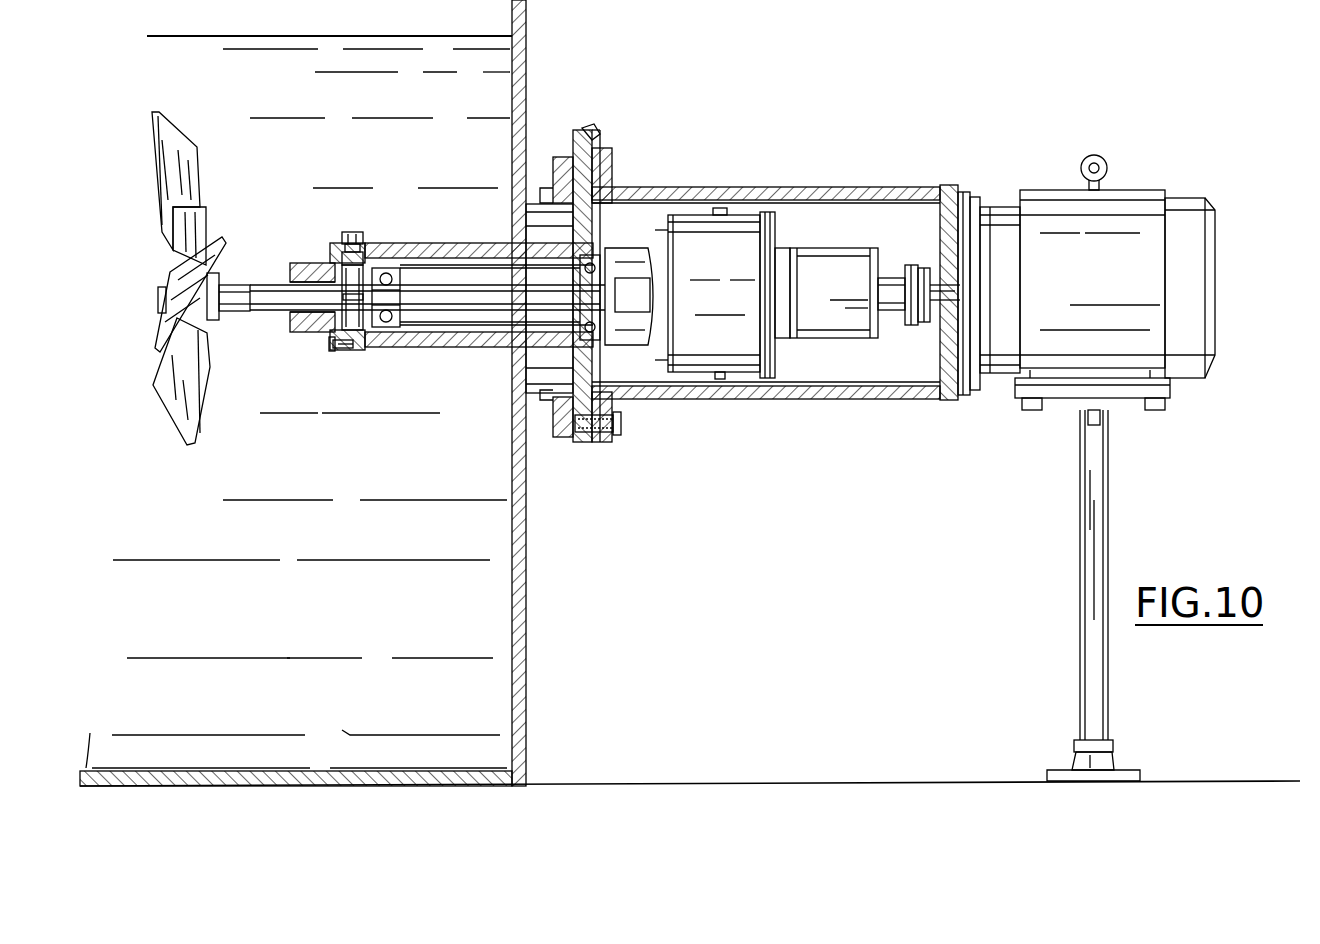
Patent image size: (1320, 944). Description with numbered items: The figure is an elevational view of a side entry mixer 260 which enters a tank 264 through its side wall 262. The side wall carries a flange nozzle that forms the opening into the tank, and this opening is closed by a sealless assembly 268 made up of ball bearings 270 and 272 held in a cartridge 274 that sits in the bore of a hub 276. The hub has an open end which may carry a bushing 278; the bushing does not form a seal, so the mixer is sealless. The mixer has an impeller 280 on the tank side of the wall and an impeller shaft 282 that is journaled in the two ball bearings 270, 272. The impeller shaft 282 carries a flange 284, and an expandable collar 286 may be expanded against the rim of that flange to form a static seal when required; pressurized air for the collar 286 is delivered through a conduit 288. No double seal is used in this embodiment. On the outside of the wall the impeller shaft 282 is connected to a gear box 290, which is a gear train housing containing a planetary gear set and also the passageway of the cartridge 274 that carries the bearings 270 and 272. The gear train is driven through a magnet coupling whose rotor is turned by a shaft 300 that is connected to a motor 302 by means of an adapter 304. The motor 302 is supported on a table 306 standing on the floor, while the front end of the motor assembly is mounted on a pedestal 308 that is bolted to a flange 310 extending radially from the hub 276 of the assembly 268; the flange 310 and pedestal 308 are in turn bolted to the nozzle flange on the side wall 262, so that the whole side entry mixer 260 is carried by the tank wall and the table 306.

The side entry mixer 260 is at (787, 142).
The side wall 262 is at (527, 574).
The tank 264 is at (404, 548).
The assembly 268 is at (455, 226).
The ball bearing 270 is at (378, 332).
The ball bearing 272 is at (615, 266).
The cartridge 274 is at (455, 333).
The hub 276 is at (368, 233).
The bushing 278 is at (308, 261).
The impeller 280 is at (177, 434).
The impeller shaft 282 is at (442, 302).
The flange 284 is at (353, 308).
The expandable collar 286 is at (356, 350).
The conduit 288 is at (477, 243).
The gear box 290 is at (705, 372).
The shaft 300 is at (897, 313).
The motor 302 is at (1127, 189).
The adapter 304 is at (913, 266).
The table 306 is at (1107, 454).
The pedestal 308 is at (807, 399).
The flange 310 is at (582, 442).